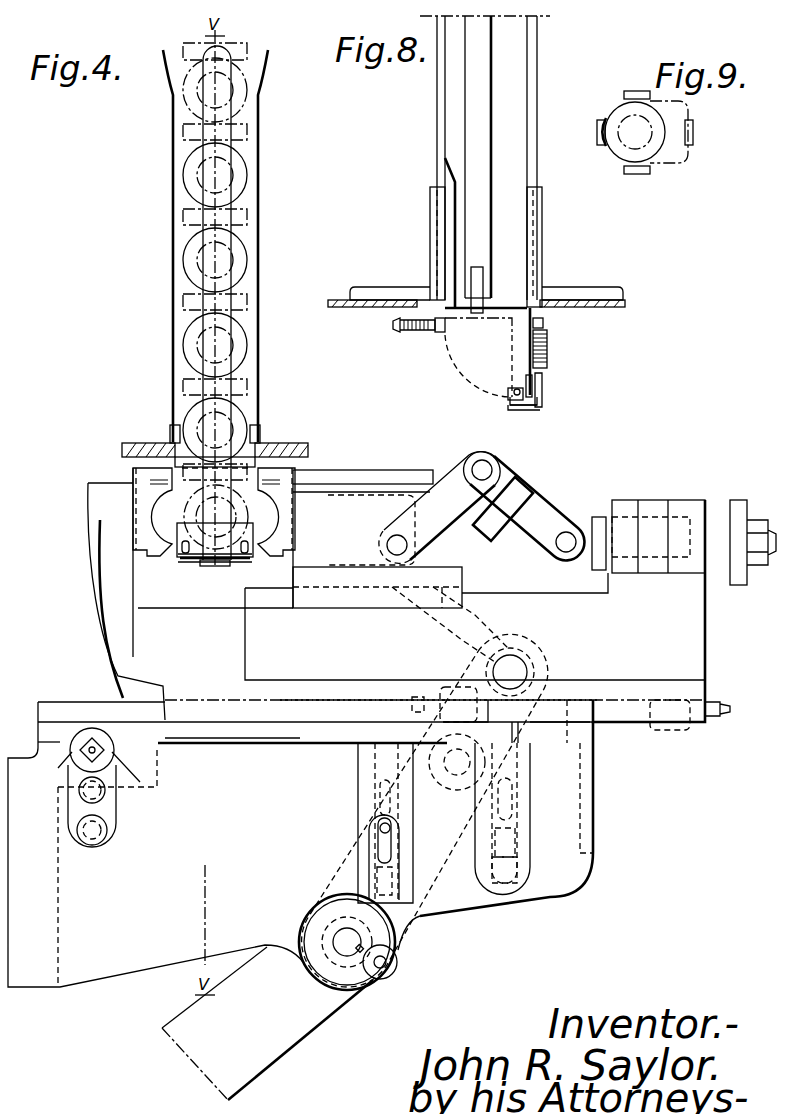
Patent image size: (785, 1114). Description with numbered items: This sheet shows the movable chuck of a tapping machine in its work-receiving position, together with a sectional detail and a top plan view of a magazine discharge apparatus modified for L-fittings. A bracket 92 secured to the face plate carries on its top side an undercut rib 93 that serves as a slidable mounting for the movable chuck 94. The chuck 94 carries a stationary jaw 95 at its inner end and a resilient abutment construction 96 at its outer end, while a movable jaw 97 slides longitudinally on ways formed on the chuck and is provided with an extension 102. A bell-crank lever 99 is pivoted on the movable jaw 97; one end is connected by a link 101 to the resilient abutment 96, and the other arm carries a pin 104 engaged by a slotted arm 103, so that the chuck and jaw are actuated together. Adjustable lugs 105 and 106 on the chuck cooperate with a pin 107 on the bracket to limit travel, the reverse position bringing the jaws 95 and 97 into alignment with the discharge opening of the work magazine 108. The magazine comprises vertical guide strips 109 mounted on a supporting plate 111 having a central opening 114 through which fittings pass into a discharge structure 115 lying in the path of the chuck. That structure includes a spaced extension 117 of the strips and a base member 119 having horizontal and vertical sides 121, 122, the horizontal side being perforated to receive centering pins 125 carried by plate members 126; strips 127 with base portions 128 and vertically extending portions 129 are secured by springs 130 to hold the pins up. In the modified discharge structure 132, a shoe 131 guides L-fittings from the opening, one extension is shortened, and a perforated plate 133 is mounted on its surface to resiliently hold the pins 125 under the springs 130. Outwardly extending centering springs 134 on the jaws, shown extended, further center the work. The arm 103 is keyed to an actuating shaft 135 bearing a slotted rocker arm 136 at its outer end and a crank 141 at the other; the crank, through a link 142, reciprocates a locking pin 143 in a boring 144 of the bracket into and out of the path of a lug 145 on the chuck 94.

In FIG. 4, the bracket 92 is at (88, 960).
In FIG. 4, the undercut rib 93 is at (70, 700).
In FIG. 4, the movable chuck 94 is at (683, 632).
In FIG. 4, the stationary jaw 95 is at (100, 507).
In FIG. 4, the resilient abutment construction 96 is at (705, 492).
In FIG. 4, the movable jaw 97 is at (387, 505).
In FIG. 4, the bell-crank lever 99 is at (440, 520).
In FIG. 4, the link 101 is at (538, 504).
In FIG. 4, the extension 102 is at (352, 472).
In FIG. 4, the slotted arm 103 is at (540, 730).
In FIG. 4, the pin 104 is at (512, 655).
In FIG. 4, the adjustable lug 105 is at (528, 664).
In FIG. 4, the adjustable lug 106 is at (655, 715).
In FIG. 4, the pin 107 is at (540, 708).
In FIG. 4, the work magazine 108 is at (238, 260).
In FIG. 9, the work magazine 108 is at (646, 132).
In FIG. 4, the guide strips 109 is at (205, 125).
In FIG. 8, the guide strips 109 is at (430, 102).
In FIG. 9, the guide strips 109 is at (634, 98).
In FIG. 4, the supporting plate 111 is at (300, 447).
In FIG. 8, the supporting plate 111 is at (345, 305).
In FIG. 4, the central opening 114 is at (240, 455).
In FIG. 8, the central opening 114 is at (518, 300).
In FIG. 4, the discharge structure 115 is at (192, 455).
In FIG. 4, the extension 117 is at (216, 517).
In FIG. 8, the extension 117 is at (548, 347).
In FIG. 4, the base member 119 is at (180, 554).
In FIG. 4, the horizontal side 121 is at (215, 545).
In FIG. 8, the horizontal side 121 is at (489, 398).
In FIG. 4, the vertical side 122 is at (250, 535).
In FIG. 8, the vertical side 122 is at (536, 385).
In FIG. 4, the centering pins 125 is at (185, 556).
In FIG. 8, the centering pins 125 is at (462, 327).
In FIG. 4, the plate members 126 is at (236, 562).
In FIG. 8, the plate members 126 is at (512, 408).
In FIG. 8, the strips 127 is at (540, 396).
In FIG. 4, the base portions 128 is at (210, 565).
In FIG. 8, the base portions 128 is at (514, 410).
In FIG. 8, the vertically extending portions 129 is at (540, 408).
In FIG. 8, the springs 130 is at (545, 333).
In FIG. 8, the shoe 131 is at (445, 180).
In FIG. 9, the shoe 131 is at (612, 152).
In FIG. 8, the discharge structure 132 is at (478, 366).
In FIG. 8, the perforated plate 133 is at (440, 332).
In FIG. 4, the centering springs 134 is at (214, 512).
In FIG. 4, the actuating shaft 135 is at (340, 940).
In FIG. 4, the rocker arm 136 is at (318, 1015).
In FIG. 4, the crank 141 is at (380, 975).
In FIG. 4, the link 142 is at (395, 818).
In FIG. 4, the locking pin 143 is at (378, 742).
In FIG. 4, the boring 144 is at (362, 762).
In FIG. 4, the lug 145 is at (440, 688).